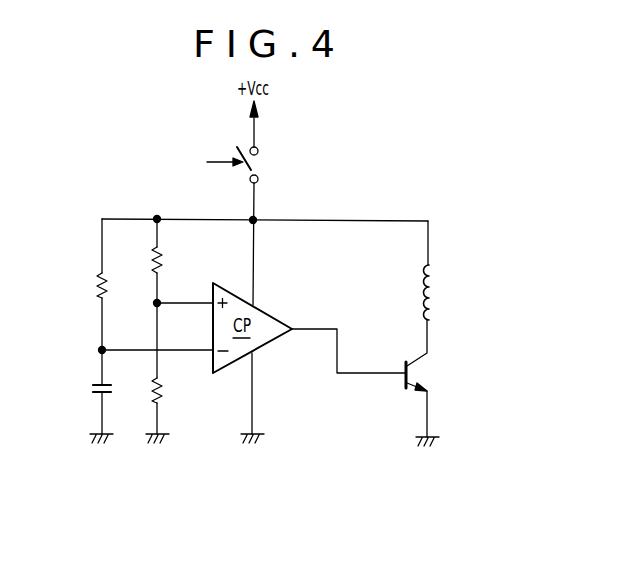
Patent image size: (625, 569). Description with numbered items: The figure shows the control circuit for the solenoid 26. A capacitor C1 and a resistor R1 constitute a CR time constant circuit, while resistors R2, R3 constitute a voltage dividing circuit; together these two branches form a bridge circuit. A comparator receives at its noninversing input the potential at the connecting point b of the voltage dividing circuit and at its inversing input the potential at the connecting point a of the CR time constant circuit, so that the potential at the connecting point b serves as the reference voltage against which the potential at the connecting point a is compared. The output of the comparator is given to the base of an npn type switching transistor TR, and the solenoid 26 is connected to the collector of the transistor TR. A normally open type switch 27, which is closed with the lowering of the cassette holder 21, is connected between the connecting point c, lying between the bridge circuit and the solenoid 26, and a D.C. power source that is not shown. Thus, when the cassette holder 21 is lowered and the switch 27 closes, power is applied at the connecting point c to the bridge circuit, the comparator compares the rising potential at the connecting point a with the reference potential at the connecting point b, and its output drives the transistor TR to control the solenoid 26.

The cassette holder 21 is at (209, 166).
The solenoid 26 is at (435, 291).
The normally open type switch 27 is at (262, 160).
The resistor R1 is at (101, 288).
The resistor R2 is at (161, 265).
The resistor R3 is at (161, 395).
The capacitor C1 is at (95, 389).
The npn type switching transistor TR is at (418, 378).
The connecting point a is at (101, 350).
The connecting point b is at (156, 304).
The connecting point c is at (255, 219).